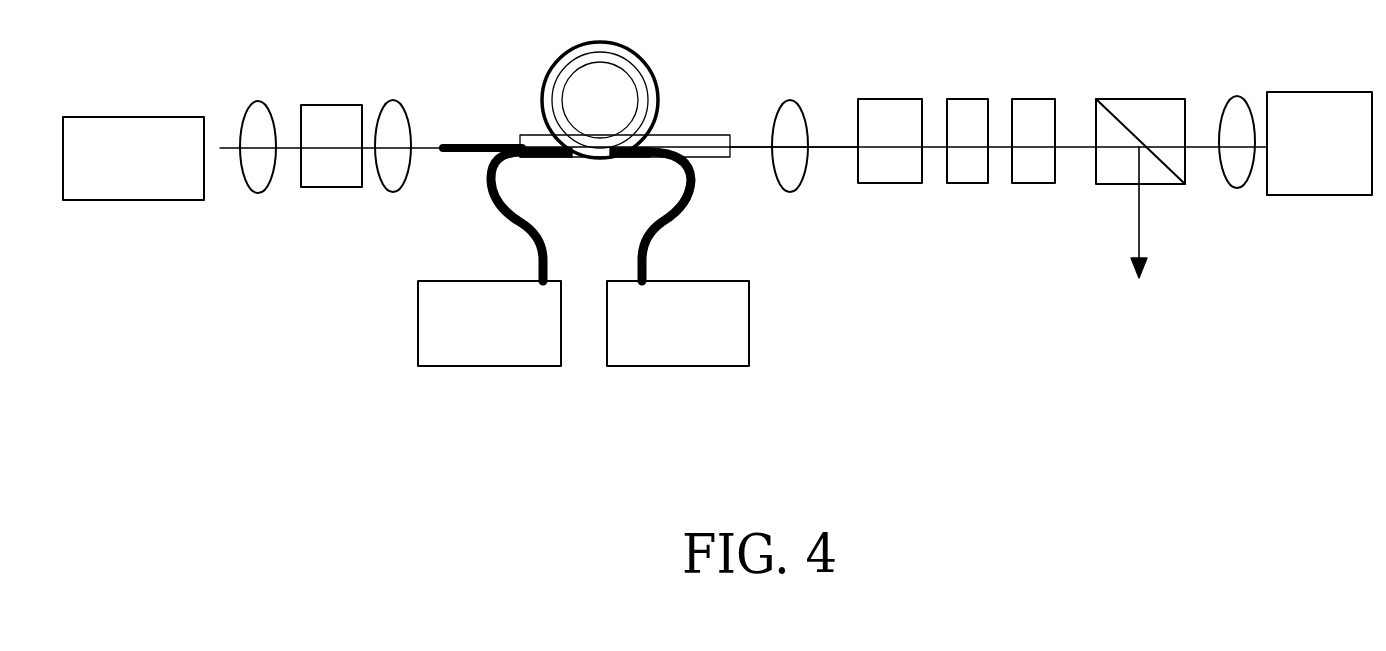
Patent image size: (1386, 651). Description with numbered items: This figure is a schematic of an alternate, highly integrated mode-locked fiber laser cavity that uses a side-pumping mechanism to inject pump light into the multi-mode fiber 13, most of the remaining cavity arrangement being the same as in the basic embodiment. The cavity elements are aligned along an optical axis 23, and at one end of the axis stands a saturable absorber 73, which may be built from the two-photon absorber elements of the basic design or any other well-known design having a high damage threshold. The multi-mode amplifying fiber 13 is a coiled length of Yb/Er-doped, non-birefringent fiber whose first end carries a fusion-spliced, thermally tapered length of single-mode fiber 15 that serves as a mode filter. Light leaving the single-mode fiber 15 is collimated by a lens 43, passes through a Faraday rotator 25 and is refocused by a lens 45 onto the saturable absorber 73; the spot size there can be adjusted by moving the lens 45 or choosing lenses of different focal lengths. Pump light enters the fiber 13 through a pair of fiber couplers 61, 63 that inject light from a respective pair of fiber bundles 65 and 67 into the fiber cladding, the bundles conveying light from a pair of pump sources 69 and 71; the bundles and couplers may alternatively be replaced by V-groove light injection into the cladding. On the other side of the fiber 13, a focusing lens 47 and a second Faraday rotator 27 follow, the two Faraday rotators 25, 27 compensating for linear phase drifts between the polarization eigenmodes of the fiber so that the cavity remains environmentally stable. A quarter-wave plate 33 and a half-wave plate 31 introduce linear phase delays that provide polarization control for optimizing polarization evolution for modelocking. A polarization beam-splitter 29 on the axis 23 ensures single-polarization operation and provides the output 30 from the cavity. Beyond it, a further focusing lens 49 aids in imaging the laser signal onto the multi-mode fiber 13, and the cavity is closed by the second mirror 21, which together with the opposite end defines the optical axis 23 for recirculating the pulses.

The saturable absorber 73 is at (108, 117).
The lens 45 is at (258, 101).
The Faraday rotator 25 is at (330, 105).
The lens 43 is at (393, 99).
The single-mode fiber 15 is at (473, 148).
The multi-mode amplifying fiber 13 is at (650, 70).
The fiber coupler 61 is at (530, 157).
The fiber coupler 63 is at (650, 160).
The fiber bundle 65 is at (517, 227).
The fiber bundle 67 is at (650, 237).
The pump source 69 is at (513, 366).
The pump source 71 is at (672, 366).
The optical axis 23 is at (819, 145).
The focusing lens 47 is at (790, 192).
The Faraday rotator 27 is at (888, 183).
The quarter-wave plate 33 is at (968, 99).
The half-wave plate 31 is at (1030, 99).
The polarization beam-splitter 29 is at (1133, 99).
The output 30 is at (1142, 235).
The focusing lens 49 is at (1238, 96).
The second mirror 21 is at (1292, 195).